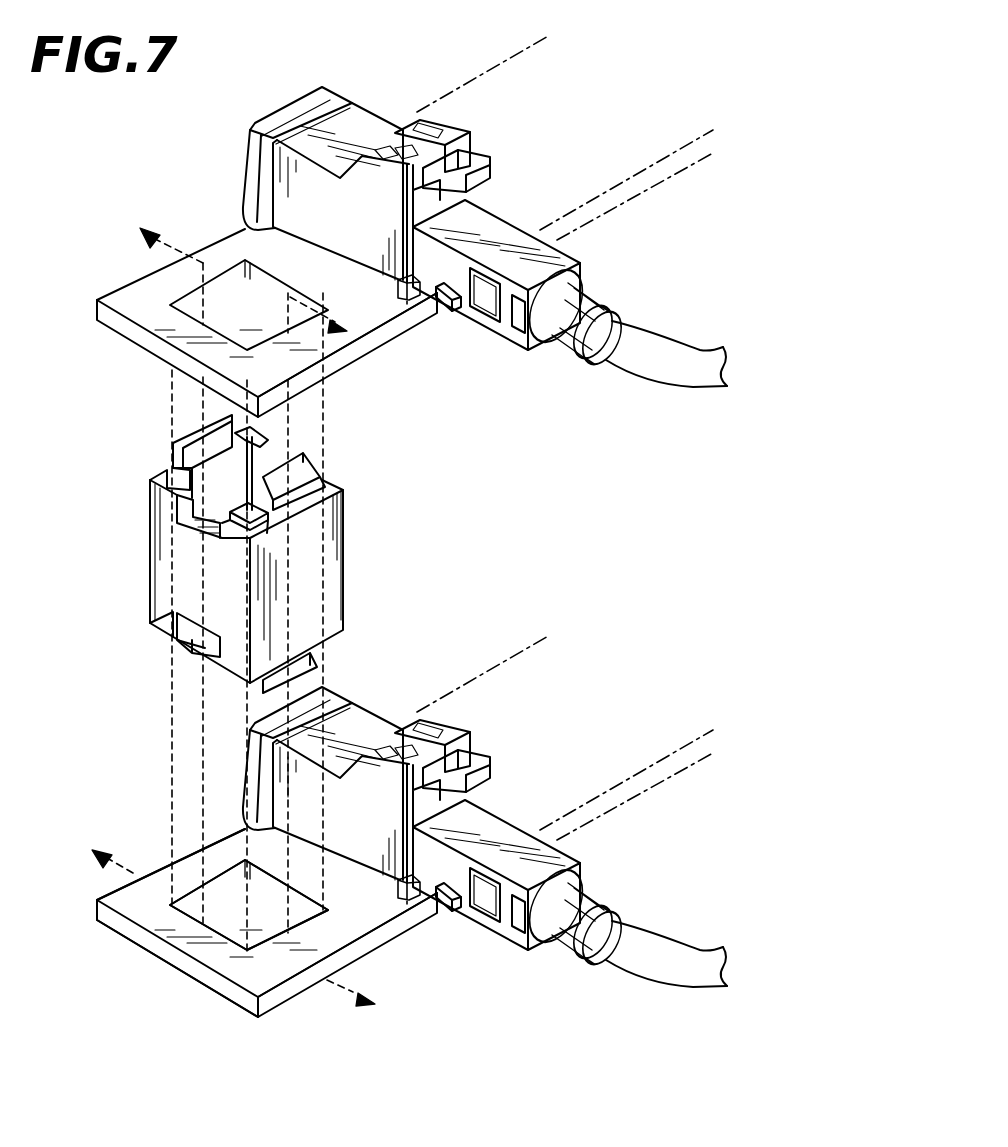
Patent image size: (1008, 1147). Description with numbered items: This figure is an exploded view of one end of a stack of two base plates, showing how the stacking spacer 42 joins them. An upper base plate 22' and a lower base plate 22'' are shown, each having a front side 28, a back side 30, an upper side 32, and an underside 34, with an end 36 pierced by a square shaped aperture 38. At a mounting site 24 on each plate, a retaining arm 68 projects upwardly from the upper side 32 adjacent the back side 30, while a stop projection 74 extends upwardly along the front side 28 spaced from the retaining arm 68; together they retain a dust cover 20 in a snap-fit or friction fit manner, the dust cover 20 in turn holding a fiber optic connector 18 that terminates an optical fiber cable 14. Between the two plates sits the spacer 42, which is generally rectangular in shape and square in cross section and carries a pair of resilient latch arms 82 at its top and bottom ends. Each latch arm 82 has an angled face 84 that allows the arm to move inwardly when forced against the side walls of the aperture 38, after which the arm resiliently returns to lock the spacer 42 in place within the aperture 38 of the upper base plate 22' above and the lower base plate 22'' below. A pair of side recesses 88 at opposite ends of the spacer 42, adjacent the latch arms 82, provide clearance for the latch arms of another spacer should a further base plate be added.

The optical fiber cable 14 is at (700, 352).
The fiber optic connector 18 is at (494, 222).
The dust cover 20 is at (430, 142).
The upper base plate 22' is at (233, 323).
The lower base plate 22'' is at (259, 923).
The mounting site 24 is at (238, 240).
The front side 28 is at (372, 340).
The back side 30 is at (152, 267).
The upper side 32 is at (125, 898).
The underside 34 is at (197, 985).
The end of base plate 36 is at (100, 305).
The square shaped aperture 38 is at (200, 918).
The spacer 42 is at (330, 598).
The retaining arm 68 is at (288, 110).
The stop projection 74 is at (412, 288).
The latch arm 82 is at (172, 445).
The angled face 84 is at (320, 470).
The side recess 88 is at (160, 512).